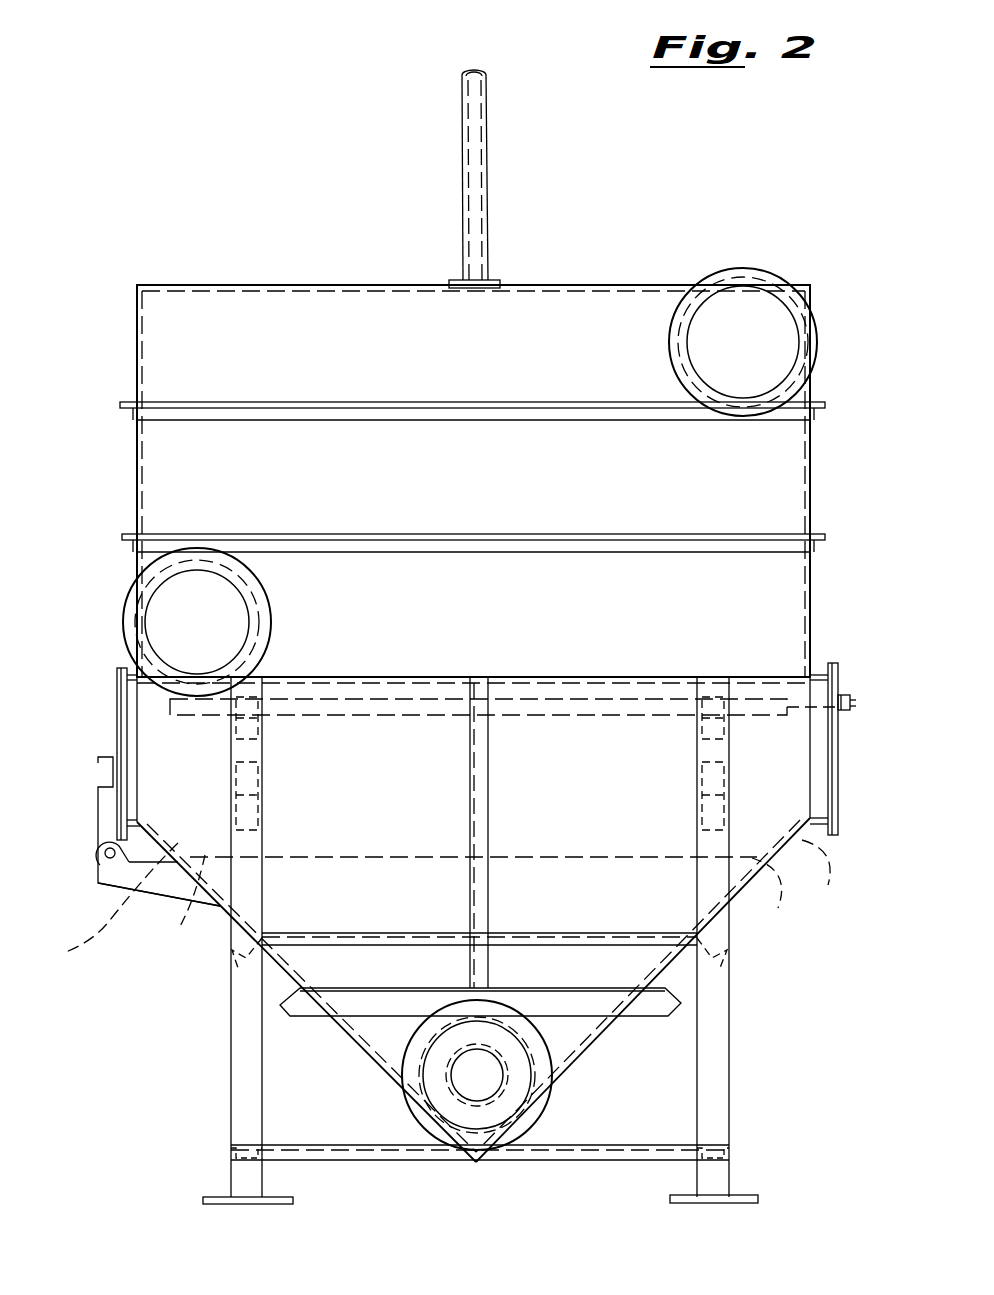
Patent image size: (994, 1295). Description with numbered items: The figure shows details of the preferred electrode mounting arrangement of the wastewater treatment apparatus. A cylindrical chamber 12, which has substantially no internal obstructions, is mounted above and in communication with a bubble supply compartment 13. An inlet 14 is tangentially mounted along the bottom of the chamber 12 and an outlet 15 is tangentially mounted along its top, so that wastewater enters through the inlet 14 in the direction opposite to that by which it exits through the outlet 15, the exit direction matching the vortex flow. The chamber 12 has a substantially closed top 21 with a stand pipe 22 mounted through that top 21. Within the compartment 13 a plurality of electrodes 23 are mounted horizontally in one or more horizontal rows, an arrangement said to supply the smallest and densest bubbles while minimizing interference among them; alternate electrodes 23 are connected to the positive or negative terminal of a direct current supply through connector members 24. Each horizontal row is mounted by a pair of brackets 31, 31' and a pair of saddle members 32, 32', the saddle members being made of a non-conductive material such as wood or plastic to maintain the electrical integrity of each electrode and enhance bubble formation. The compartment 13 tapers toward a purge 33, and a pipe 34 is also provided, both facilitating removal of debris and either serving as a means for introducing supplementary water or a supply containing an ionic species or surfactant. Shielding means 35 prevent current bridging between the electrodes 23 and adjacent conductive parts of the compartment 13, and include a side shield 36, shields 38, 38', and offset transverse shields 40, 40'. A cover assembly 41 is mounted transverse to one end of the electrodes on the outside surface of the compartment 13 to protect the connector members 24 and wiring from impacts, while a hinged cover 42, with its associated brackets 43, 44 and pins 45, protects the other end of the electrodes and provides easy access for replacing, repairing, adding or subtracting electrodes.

The cylindrical chamber 12 is at (484, 481).
The bubble supply compartment 13 is at (678, 965).
The inlet 14 is at (148, 612).
The outlet 15 is at (792, 370).
The closed top 21 is at (575, 285).
The stand pipe 22 is at (488, 182).
The electrodes 23 is at (760, 700).
The connector members 24 is at (853, 700).
The bracket 31 is at (261, 940).
The bracket 31' is at (686, 940).
The saddle member 32 is at (279, 735).
The saddle member 32' is at (670, 731).
The purge 33 is at (513, 1095).
The pipe 34 is at (492, 1068).
The shielding means 35 is at (600, 830).
The side shield 36 is at (386, 860).
The shield 38 is at (452, 906).
The shield 38' is at (775, 900).
The offset transverse shield 40 is at (107, 907).
The offset transverse shield 40' is at (825, 879).
The cover assembly 41 is at (838, 797).
The hinged cover 42 is at (117, 705).
The bracket 43 is at (152, 882).
The bracket 44 is at (105, 815).
The pins 45 is at (103, 860).